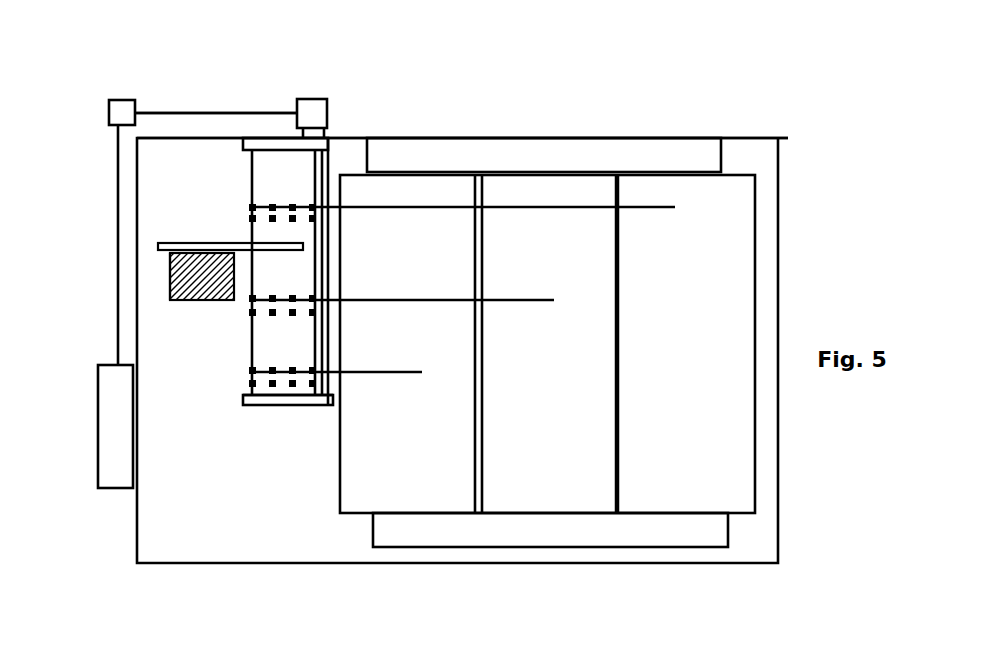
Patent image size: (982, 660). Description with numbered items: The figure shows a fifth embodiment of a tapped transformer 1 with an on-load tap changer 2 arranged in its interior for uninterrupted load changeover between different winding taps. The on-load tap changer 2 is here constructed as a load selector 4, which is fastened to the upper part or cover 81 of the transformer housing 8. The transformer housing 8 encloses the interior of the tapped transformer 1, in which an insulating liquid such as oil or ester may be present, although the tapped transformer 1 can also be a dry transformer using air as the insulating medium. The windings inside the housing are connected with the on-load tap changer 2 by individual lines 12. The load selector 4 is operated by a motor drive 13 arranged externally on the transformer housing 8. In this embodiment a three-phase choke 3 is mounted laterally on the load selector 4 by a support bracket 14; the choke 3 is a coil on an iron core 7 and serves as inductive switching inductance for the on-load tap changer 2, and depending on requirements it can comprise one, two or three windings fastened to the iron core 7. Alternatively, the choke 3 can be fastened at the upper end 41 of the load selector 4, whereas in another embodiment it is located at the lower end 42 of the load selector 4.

The tapped transformer 1 is at (806, 190).
The on-load tap changer 2 is at (330, 163).
The choke 3 is at (190, 292).
The load selector 4 is at (272, 193).
The upper end 41 is at (272, 157).
The lower end 42 is at (260, 392).
The iron core 7 is at (170, 262).
The transformer housing 8 is at (452, 138).
The upper part or cover 81 is at (384, 138).
The lines 12 is at (578, 208).
The motor drive 13 is at (115, 398).
The support bracket 14 is at (163, 245).